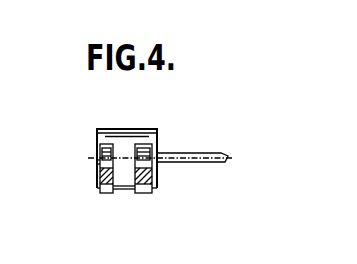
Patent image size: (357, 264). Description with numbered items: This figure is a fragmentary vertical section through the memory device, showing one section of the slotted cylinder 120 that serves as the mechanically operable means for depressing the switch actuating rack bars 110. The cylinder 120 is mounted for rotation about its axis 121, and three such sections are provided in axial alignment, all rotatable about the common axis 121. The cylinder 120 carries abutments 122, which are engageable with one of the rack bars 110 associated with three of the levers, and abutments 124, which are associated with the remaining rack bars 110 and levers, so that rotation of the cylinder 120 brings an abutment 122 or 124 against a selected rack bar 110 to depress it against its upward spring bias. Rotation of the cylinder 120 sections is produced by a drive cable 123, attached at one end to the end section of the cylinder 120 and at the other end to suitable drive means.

The switch actuating rack bar 110 is at (127, 190).
The slotted cylinder 120 is at (132, 133).
The axis 121 is at (86, 153).
The abutment 122 is at (97, 150).
The drive cable 123 is at (197, 162).
The abutment 124 is at (140, 147).